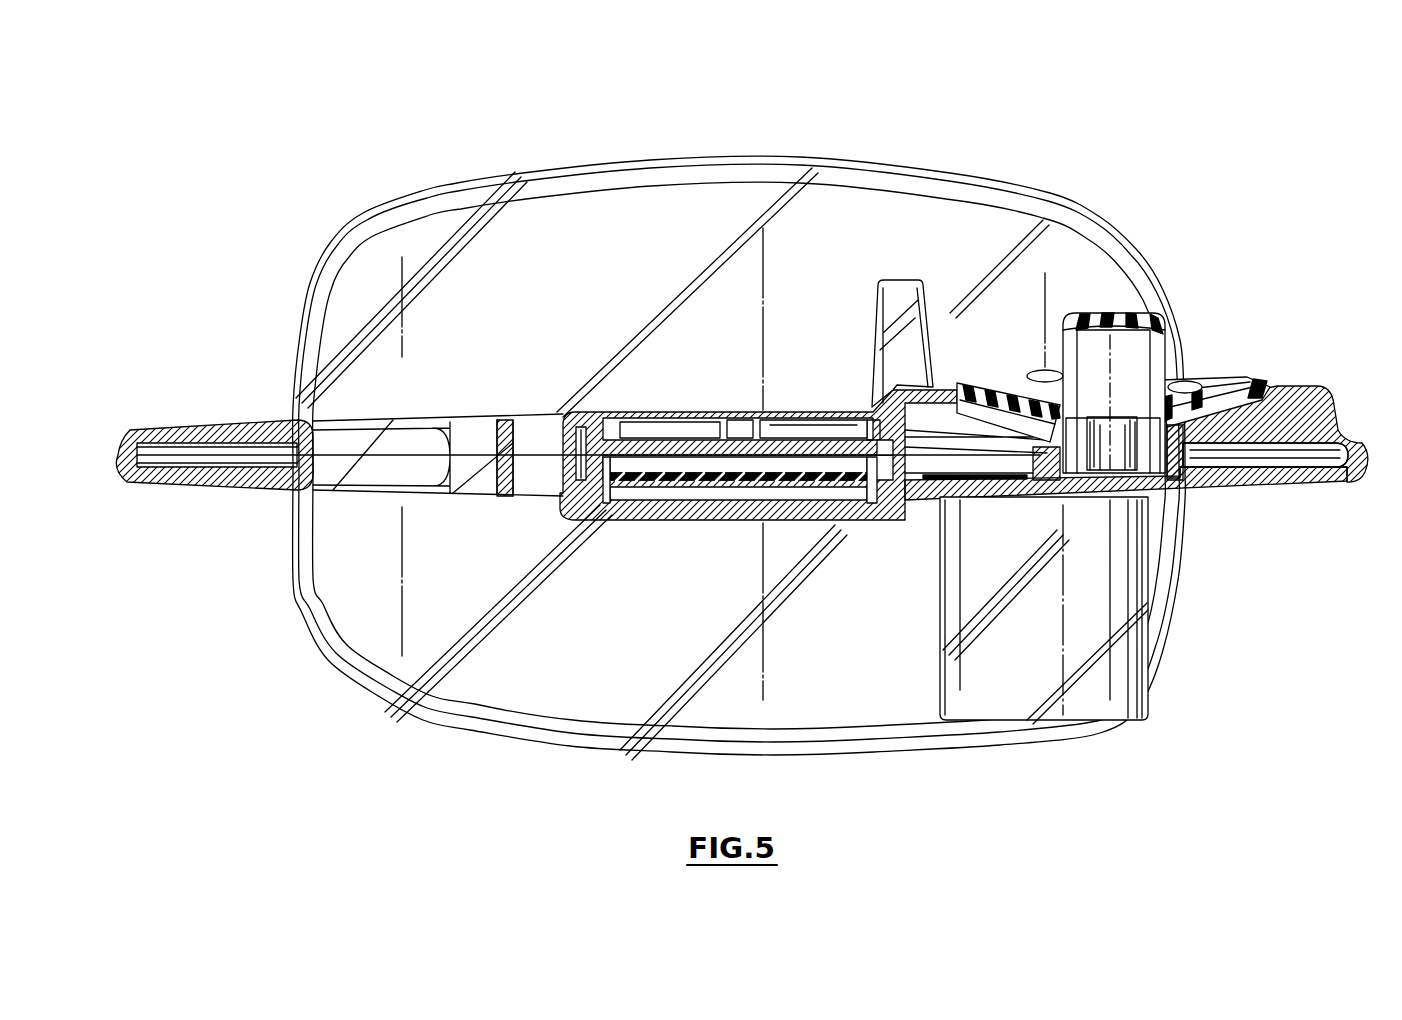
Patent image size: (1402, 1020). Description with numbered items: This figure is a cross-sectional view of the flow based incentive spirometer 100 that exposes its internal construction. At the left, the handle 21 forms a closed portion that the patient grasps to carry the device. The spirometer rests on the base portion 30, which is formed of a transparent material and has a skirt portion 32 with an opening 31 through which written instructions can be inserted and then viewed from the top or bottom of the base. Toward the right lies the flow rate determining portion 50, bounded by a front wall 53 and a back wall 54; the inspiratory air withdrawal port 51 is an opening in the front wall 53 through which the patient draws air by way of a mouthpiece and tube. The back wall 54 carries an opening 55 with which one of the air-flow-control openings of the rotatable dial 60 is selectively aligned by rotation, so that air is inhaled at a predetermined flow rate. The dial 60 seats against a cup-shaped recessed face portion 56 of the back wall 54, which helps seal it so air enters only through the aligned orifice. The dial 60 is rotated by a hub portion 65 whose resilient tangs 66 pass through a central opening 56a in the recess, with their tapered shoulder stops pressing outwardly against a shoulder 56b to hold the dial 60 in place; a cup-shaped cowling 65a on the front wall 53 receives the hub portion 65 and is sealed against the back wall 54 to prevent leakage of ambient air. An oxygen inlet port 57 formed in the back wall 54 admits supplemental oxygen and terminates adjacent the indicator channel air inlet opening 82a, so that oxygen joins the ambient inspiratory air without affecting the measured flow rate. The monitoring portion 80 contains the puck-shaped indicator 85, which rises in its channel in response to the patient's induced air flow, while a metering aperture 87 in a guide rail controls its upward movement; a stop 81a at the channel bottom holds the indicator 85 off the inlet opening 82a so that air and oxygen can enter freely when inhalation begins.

The flow based incentive spirometer 100 is at (590, 136).
The handle 21 is at (365, 432).
The base portion 30 is at (370, 282).
The opening 31 is at (436, 205).
The skirt portion 32 is at (316, 622).
The flow rate determining portion 50 is at (1195, 515).
The inspiratory air withdrawal port 51 is at (1100, 677).
The front wall 53 is at (1280, 487).
The back wall 54 is at (937, 385).
The opening 55 is at (965, 412).
The face portion 56 is at (1268, 384).
The opening 56a is at (1148, 400).
The shoulder 56b is at (1192, 482).
The oxygen inlet port 57 is at (877, 313).
The dial 60 is at (1203, 353).
The hub portion 65 is at (1092, 312).
The cup-shaped cowling 65a is at (1040, 476).
The resilient tangs 66 is at (1112, 472).
The monitoring portion 80 is at (652, 392).
The stop 81a is at (747, 420).
The indicator channel air inlet opening 82a is at (840, 428).
The indicator 85 is at (712, 490).
The metering aperture 87 is at (900, 512).